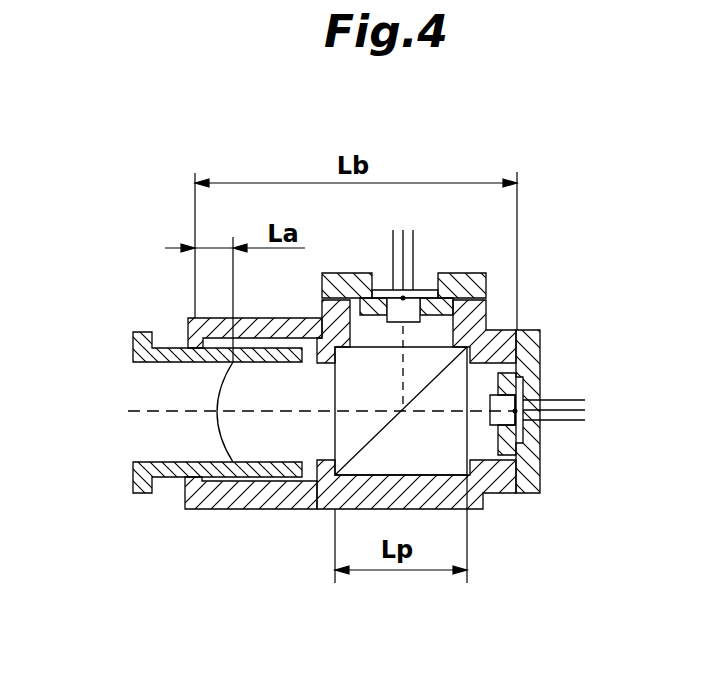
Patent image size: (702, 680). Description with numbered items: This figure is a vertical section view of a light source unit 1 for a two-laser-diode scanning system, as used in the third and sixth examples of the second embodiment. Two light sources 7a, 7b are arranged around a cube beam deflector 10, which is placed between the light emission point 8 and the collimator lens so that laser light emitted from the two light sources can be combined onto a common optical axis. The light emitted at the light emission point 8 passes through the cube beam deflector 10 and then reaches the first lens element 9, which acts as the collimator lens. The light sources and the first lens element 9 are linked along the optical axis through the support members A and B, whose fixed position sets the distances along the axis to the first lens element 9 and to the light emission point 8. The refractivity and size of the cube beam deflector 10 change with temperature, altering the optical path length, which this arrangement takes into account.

The light source unit 1 is at (118, 258).
The support member A is at (133, 478).
The support member B is at (281, 510).
The light source 7a is at (525, 432).
The light source 7b is at (423, 288).
The light emission point 8 is at (525, 390).
The first lens element 9 is at (225, 432).
The cube beam deflector 10 is at (432, 463).